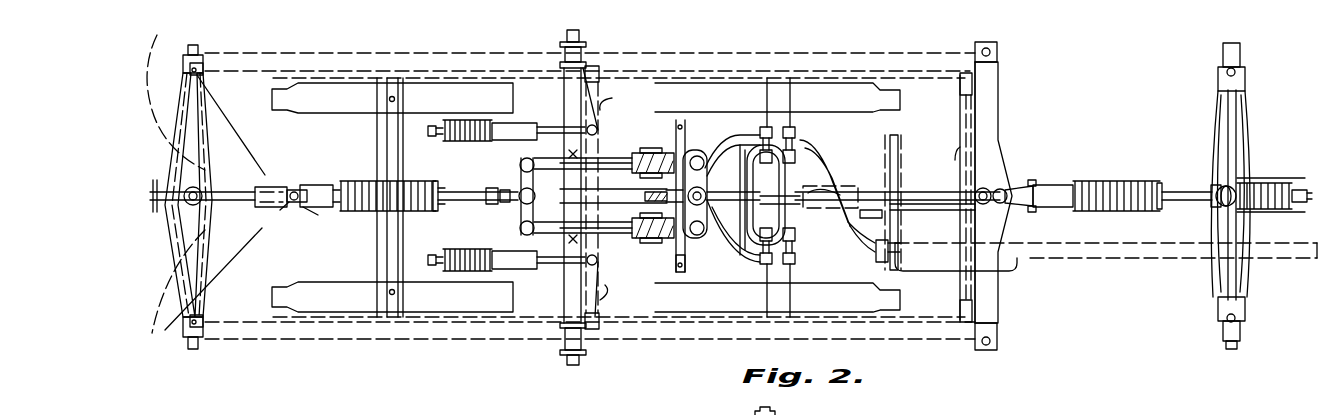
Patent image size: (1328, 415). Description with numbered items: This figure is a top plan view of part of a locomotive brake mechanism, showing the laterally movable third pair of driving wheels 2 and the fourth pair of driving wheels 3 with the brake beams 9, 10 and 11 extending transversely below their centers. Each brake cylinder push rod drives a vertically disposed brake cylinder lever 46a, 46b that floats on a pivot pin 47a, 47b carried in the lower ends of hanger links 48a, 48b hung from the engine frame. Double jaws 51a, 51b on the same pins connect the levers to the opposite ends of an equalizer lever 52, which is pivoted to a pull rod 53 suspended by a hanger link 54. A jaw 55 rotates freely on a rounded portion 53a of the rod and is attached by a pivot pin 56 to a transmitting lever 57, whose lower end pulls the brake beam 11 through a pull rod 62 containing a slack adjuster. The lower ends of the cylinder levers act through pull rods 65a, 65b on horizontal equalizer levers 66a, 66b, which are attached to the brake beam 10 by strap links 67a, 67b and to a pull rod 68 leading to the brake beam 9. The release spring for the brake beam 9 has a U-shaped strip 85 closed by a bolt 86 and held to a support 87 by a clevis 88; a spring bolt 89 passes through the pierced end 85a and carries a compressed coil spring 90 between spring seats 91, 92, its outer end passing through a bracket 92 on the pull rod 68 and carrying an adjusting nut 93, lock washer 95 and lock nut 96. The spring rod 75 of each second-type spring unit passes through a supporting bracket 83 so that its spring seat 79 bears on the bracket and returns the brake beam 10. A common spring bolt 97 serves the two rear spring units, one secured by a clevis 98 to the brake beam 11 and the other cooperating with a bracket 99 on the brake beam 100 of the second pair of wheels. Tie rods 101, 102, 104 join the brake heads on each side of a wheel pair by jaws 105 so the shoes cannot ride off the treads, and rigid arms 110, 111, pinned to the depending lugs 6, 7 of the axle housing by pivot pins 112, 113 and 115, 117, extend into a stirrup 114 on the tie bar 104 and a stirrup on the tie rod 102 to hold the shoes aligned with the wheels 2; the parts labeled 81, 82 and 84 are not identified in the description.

The third pair of driving wheels 2 is at (803, 61).
The fourth pair of driving wheels 3 is at (363, 62).
The depending lugs 6 is at (745, 240).
The depending lugs 7 is at (800, 150).
The brake beam 9 is at (200, 108).
The brake beam 10 is at (563, 85).
The brake beam 11 is at (1000, 72).
The brake cylinder lever 46a is at (676, 155).
The brake cylinder lever 46b is at (700, 296).
The pivot pin 47a is at (648, 147).
The pivot pin 47b is at (665, 245).
The hanger links 48a is at (643, 148).
The hanger links 48b is at (657, 245).
The double jaw 51a is at (700, 143).
The double jaw 51b is at (712, 240).
The equalizer lever 52 is at (712, 233).
The pull rod 53 is at (768, 195).
The rounded portion 53a is at (825, 190).
The hanger link 54 is at (630, 203).
The jaw 55 is at (860, 188).
The pivot pin 56 is at (887, 160).
The transmitting lever 57 is at (874, 211).
The pull rod 62 is at (925, 198).
The pull rod 65a is at (603, 162).
The pull rod 65b is at (650, 238).
The equalizer lever 66a is at (519, 162).
The equalizer lever 66b is at (519, 232).
The strap link 67a is at (548, 133).
The strap link 67b is at (512, 268).
The pull rod 68 is at (257, 197).
The spring rod 75 is at (434, 126).
The spring seat 79 is at (1218, 186).
The clevis pin 81 is at (330, 208).
The small spring 82 is at (460, 140).
The supporting bracket 83 is at (500, 123).
The right spring 84 is at (1278, 190).
The U-shaped strip 85 is at (370, 212).
The end of strip 85a is at (462, 190).
The bolt 86 is at (325, 186).
The support 87 is at (290, 189).
The clevis 88 is at (298, 190).
The spring bolt 89 is at (303, 208).
The compressed coil spring 90 is at (425, 212).
The spring seat 91 is at (360, 182).
The spring seat 92 is at (468, 213).
The adjusting nut 93 is at (504, 203).
The lock washer 95 is at (520, 202).
The lock nut 96 is at (520, 188).
The common spring bolt 97 is at (1210, 190).
The clevis 98 is at (1007, 190).
The bracket 99 is at (1210, 205).
The brake beam 100 is at (1218, 100).
The tie rod 101 is at (175, 244).
The tie rod 102 is at (600, 272).
The tie rod 104 is at (960, 168).
The jaw 105 is at (203, 72).
The rigid arm 110 is at (876, 250).
The rigid arm 111 is at (645, 194).
The pivot pin 112 is at (796, 257).
The pivot pin 113 is at (797, 132).
The stirrup 114 is at (960, 207).
The pivot pin 115 is at (776, 205).
The pivot pin 117 is at (760, 132).